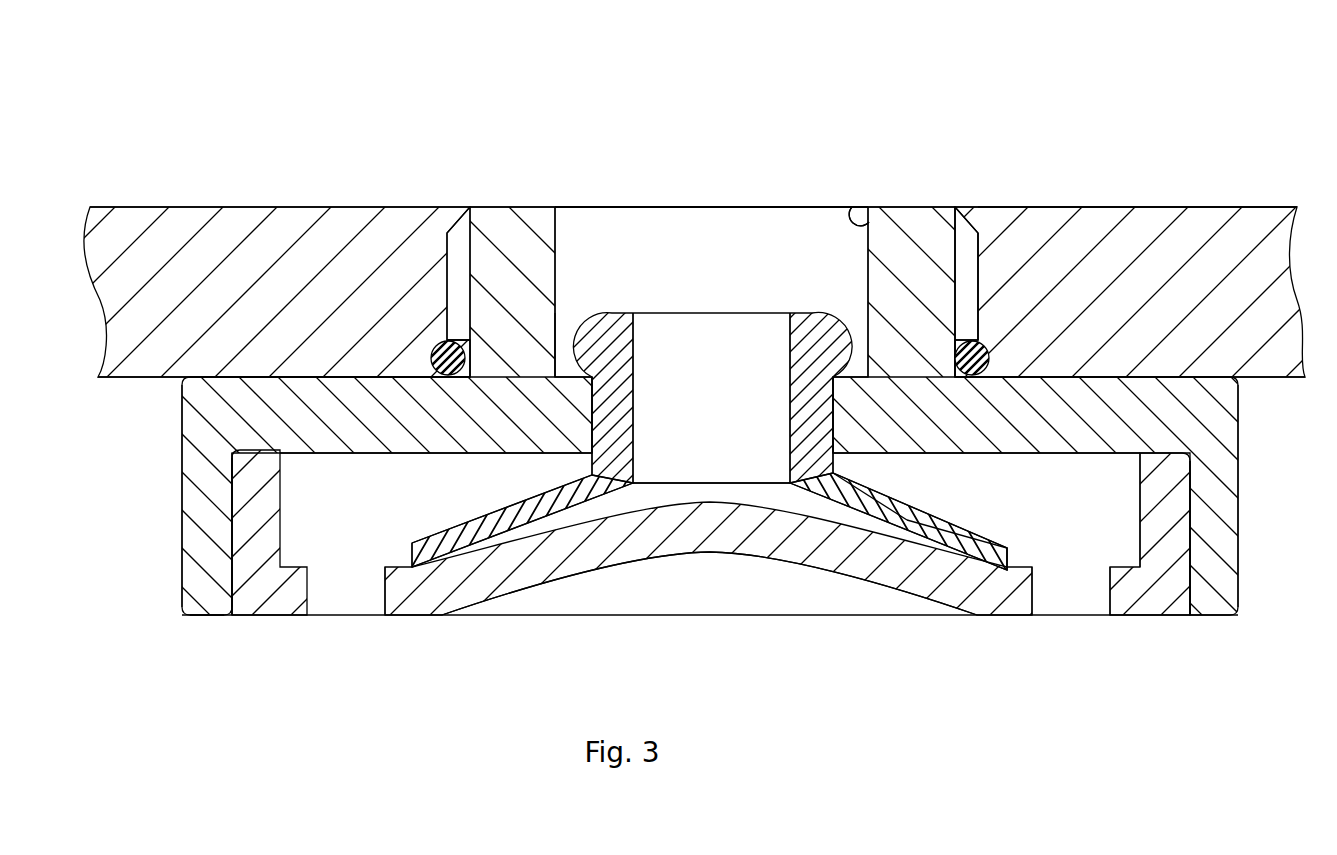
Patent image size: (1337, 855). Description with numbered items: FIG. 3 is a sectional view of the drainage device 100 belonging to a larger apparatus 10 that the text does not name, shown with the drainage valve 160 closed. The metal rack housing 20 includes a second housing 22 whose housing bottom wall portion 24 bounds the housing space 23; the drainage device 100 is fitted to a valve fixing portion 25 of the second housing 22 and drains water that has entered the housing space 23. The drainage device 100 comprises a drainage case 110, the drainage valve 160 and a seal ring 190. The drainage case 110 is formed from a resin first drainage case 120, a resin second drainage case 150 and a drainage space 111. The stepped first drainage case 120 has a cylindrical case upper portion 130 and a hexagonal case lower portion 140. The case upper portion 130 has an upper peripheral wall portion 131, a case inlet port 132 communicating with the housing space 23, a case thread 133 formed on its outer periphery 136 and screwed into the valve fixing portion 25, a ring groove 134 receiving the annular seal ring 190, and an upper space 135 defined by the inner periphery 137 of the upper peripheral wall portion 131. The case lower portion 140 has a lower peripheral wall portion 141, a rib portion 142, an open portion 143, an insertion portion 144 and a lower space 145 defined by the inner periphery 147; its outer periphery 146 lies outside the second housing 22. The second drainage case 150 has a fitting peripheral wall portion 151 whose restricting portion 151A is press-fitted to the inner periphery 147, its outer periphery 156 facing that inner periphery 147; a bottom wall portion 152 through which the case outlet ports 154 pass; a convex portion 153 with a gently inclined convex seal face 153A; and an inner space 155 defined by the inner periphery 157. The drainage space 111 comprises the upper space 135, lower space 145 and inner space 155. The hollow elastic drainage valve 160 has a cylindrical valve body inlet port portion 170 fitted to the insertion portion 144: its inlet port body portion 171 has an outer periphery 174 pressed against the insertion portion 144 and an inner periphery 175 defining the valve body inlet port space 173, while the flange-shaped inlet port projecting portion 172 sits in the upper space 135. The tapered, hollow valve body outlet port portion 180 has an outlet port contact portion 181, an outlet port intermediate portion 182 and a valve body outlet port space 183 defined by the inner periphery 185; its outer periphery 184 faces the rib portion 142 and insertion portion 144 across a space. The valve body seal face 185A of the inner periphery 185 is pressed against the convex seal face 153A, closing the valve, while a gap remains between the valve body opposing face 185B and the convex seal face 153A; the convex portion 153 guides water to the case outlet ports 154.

The flow path structure 10 is at (253, 94).
The drainage device 100 is at (668, 399).
The rack housing 20 is at (153, 207).
The second housing 22 is at (1250, 207).
The housing space 23 is at (1153, 140).
The housing bottom wall portion 24 is at (1170, 207).
The valve fixing portion 25 is at (990, 212).
The drainage case 110 is at (553, 207).
The drainage space 111 is at (650, 228).
The first drainage case 120 is at (483, 207).
The case upper portion 130 is at (933, 207).
The upper peripheral wall portion 131 is at (462, 246).
The case inlet port 132 is at (782, 207).
The case thread 133 is at (980, 250).
The ring groove 134 is at (447, 340).
The upper space 135 is at (742, 246).
The outer periphery 136 is at (980, 292).
The inner periphery 137 is at (856, 207).
The case lower portion 140 is at (1092, 385).
The lower peripheral wall portion 141 is at (205, 470).
The rib portion 142 is at (318, 385).
The open portion 143 is at (238, 612).
The insertion portion 144 is at (853, 520).
The lower space 145 is at (313, 535).
The outer periphery 146 is at (182, 440).
The inner periphery 147 is at (1192, 470).
The second drainage case 150 is at (1182, 617).
The fitting peripheral wall portion 151 is at (1170, 505).
The restricting portion 151A is at (1193, 532).
The bottom wall portion 152 is at (1112, 612).
The convex portion 153 is at (713, 553).
The convex seal face 153A is at (708, 500).
The case outlet ports 154 is at (392, 612).
The inner space 155 is at (1193, 595).
The outer periphery 156 is at (232, 580).
The inner periphery 157 is at (240, 500).
The drainage valve 160 is at (555, 355).
The valve body inlet port portion 170 is at (843, 320).
The inlet port body portion 171 is at (833, 405).
The inlet port projecting portion 172 is at (603, 333).
The valve body inlet port space 173 is at (688, 343).
The outer periphery 174 is at (592, 398).
The inner periphery 175 is at (788, 335).
The valve body outlet port portion 180 is at (440, 552).
The outlet port contact portion 181 is at (500, 565).
The outlet port intermediate portion 182 is at (558, 537).
The valve body outlet port space 183 is at (615, 505).
The outer periphery 184 is at (487, 518).
The inner periphery 185 is at (958, 668).
The valve body seal face 185A is at (935, 565).
The valve body opposing face 185B is at (833, 520).
The seal ring 190 is at (430, 355).